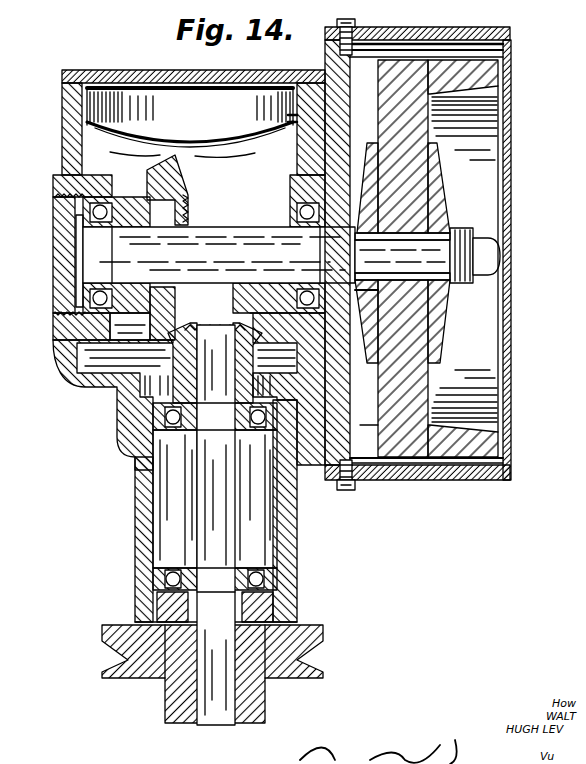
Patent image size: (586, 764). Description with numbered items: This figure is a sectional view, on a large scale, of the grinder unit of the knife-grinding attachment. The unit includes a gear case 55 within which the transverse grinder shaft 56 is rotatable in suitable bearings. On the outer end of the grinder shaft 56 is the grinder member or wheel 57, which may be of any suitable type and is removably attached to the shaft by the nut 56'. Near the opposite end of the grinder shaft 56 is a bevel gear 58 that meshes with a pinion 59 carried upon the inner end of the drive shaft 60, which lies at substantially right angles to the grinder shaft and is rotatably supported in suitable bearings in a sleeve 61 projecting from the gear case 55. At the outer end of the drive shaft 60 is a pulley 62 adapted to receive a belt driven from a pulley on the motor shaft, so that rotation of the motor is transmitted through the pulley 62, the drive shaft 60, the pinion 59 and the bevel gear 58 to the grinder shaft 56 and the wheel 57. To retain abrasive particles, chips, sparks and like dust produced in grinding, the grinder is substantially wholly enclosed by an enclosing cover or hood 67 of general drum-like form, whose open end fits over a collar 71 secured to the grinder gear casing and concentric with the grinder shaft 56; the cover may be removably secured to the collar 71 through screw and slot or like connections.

The gear case 55 is at (66, 147).
The grinder shaft 56 is at (266, 238).
The nut 56' is at (475, 236).
The grinder member or wheel 57 is at (484, 72).
The bevel gear 58 is at (178, 172).
The pinion 59 is at (253, 346).
The drive shaft 60 is at (217, 337).
The sleeve 61 is at (140, 532).
The pulley 62 is at (303, 637).
The enclosing cover or hood 67 is at (448, 473).
The collar 71 is at (375, 38).